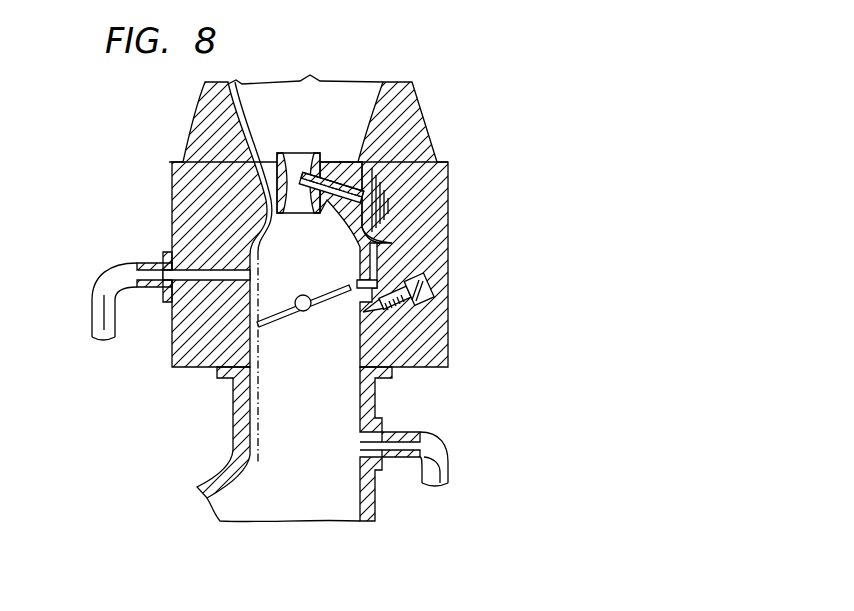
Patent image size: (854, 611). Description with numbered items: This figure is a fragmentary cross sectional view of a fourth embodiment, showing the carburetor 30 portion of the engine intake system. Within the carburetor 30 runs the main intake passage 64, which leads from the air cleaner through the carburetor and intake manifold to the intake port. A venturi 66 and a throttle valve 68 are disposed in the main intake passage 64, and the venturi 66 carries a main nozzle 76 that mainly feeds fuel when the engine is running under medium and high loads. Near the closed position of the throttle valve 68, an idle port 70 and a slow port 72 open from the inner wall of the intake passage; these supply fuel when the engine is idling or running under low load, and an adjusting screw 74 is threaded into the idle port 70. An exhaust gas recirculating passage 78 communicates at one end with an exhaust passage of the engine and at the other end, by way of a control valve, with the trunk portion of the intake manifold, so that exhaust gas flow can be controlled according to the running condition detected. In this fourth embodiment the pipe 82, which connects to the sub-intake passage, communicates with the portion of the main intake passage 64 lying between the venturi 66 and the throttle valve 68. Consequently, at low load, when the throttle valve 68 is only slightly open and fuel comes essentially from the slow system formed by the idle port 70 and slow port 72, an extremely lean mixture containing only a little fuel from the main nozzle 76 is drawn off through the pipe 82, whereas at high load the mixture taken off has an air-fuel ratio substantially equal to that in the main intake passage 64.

The carburetor 30 is at (448, 198).
The main intake passage 64 is at (310, 440).
The venturi 66 is at (292, 152).
The throttle valve 68 is at (263, 323).
The idle port 70 is at (366, 314).
The slow port 72 is at (360, 283).
The adjusting screw 74 is at (399, 305).
The main nozzle 76 is at (362, 192).
The exhaust gas recirculating passage 78 is at (448, 455).
The pipe 82 is at (92, 310).